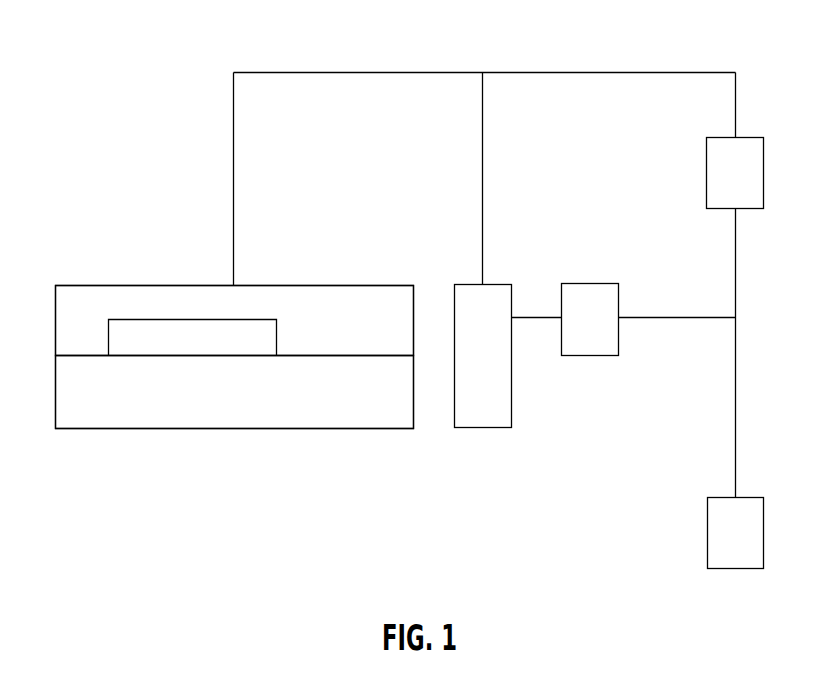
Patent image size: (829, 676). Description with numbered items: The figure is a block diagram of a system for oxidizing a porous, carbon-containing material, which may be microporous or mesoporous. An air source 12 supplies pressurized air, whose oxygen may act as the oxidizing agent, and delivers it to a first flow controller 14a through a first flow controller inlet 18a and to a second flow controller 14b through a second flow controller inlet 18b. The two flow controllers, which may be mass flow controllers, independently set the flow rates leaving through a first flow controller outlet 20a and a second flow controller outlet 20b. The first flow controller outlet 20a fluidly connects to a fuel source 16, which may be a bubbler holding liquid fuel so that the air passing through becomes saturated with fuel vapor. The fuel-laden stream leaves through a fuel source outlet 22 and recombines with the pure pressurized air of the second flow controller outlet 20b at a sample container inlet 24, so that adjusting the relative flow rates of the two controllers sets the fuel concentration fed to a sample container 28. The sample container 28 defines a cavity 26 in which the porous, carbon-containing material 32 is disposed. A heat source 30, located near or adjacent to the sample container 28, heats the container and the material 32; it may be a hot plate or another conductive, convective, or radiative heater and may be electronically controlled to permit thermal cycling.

The air source 12 is at (751, 497).
The first flow controller 14a is at (620, 345).
The second flow controller 14b is at (752, 137).
The fuel source 16 is at (513, 395).
The first flow controller inlet 18a is at (684, 317).
The second flow controller inlet 18b is at (738, 261).
The first flow controller outlet 20a is at (533, 317).
The second flow controller outlet 20b is at (590, 71).
The fuel source outlet 22 is at (482, 143).
The sample container inlet 24 is at (233, 145).
The cavity 26 is at (82, 303).
The sample container 28 is at (55, 317).
The heat source 30 is at (55, 393).
The porous, carbon-containing material 32 is at (172, 319).